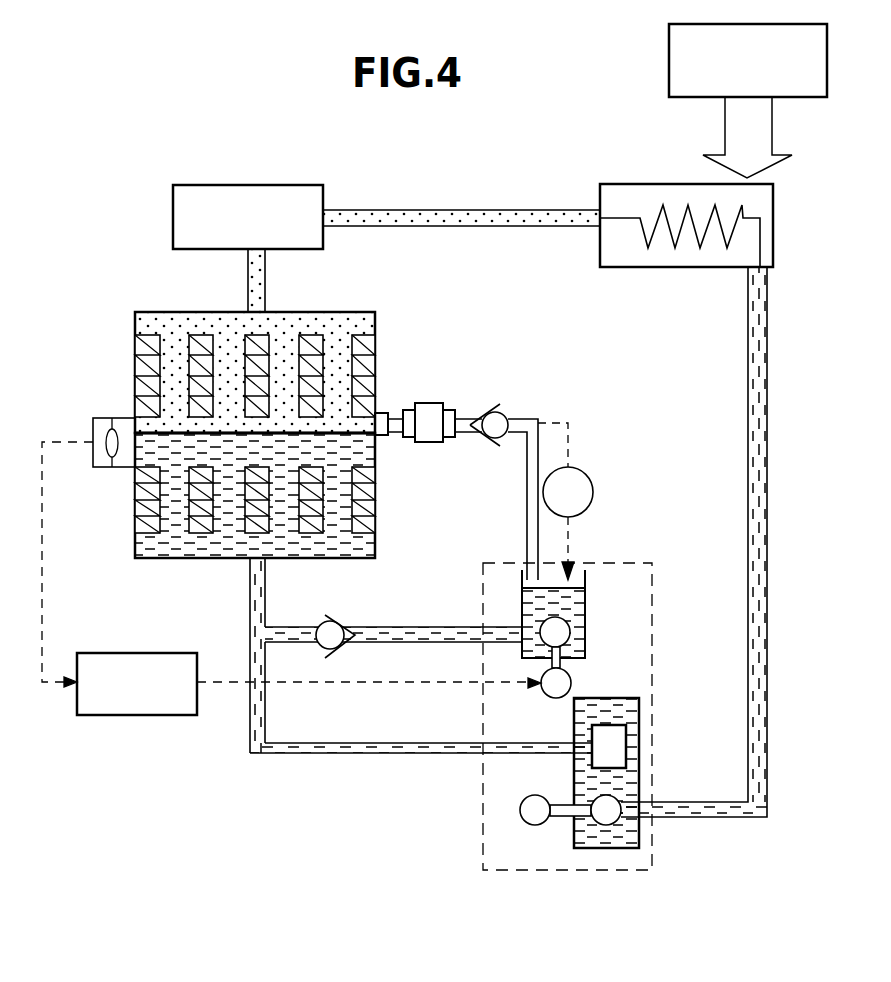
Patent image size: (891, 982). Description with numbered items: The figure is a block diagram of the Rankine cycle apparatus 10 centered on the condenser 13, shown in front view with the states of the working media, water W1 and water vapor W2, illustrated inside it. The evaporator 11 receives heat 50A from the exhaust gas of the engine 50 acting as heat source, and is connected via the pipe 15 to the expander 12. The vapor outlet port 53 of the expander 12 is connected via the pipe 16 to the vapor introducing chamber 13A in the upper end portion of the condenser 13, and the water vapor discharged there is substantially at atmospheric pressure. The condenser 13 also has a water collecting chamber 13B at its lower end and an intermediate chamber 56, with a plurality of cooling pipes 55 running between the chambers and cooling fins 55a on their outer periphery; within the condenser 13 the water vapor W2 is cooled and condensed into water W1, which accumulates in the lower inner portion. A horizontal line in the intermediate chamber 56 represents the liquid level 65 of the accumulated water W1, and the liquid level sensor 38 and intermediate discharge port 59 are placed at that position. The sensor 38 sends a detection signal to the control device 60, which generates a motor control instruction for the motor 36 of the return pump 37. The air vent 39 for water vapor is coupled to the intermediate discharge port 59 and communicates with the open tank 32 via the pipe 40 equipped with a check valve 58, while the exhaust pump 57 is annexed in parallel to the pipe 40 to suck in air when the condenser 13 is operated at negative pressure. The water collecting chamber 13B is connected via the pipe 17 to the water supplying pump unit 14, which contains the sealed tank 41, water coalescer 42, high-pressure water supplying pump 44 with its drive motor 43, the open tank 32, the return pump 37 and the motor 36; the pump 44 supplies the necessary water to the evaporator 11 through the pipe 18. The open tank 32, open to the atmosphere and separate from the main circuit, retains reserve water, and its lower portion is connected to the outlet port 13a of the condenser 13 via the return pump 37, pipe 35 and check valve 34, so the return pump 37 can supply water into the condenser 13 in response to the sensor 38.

The Rankine cycle apparatus 10 is at (496, 152).
The evaporator 11 is at (773, 245).
The expander 12 is at (303, 185).
The condenser 13 is at (268, 433).
The vapor introducing chamber 13A is at (283, 318).
The water collecting chamber 13B is at (158, 560).
The outlet port 13a is at (247, 562).
The water supplying pump unit 14 is at (652, 683).
The pipe 15 is at (448, 210).
The pipe 16 is at (248, 283).
The pipe 17 is at (318, 756).
The pipe 18 is at (767, 522).
The open tank 32 is at (587, 602).
The check valve 34 is at (326, 620).
The pipe 35 is at (403, 627).
The motor 36 is at (571, 682).
The return pump 37 is at (570, 630).
The liquid level sensor 38 is at (112, 467).
The air vent 39 is at (430, 403).
The pipe 40 is at (527, 483).
The sealed tank 41 is at (632, 775).
The water coalescer 42 is at (592, 737).
The drive motor 43 is at (533, 826).
The high-pressure water supplying pump 44 is at (615, 828).
The engine 50 is at (669, 53).
The heat 50A is at (763, 133).
The vapor outlet port 53 is at (267, 252).
The cooling pipes 55 is at (352, 377).
The cooling fins 55a is at (185, 433).
The intermediate chamber 56 is at (152, 427).
The exhaust pump 57 is at (590, 478).
The check valve 58 is at (503, 412).
The intermediate discharge port 59 is at (382, 437).
The control device 60 is at (138, 716).
The liquid level 65 is at (140, 353).
The water W1 is at (222, 540).
The water vapor W2 is at (372, 317).